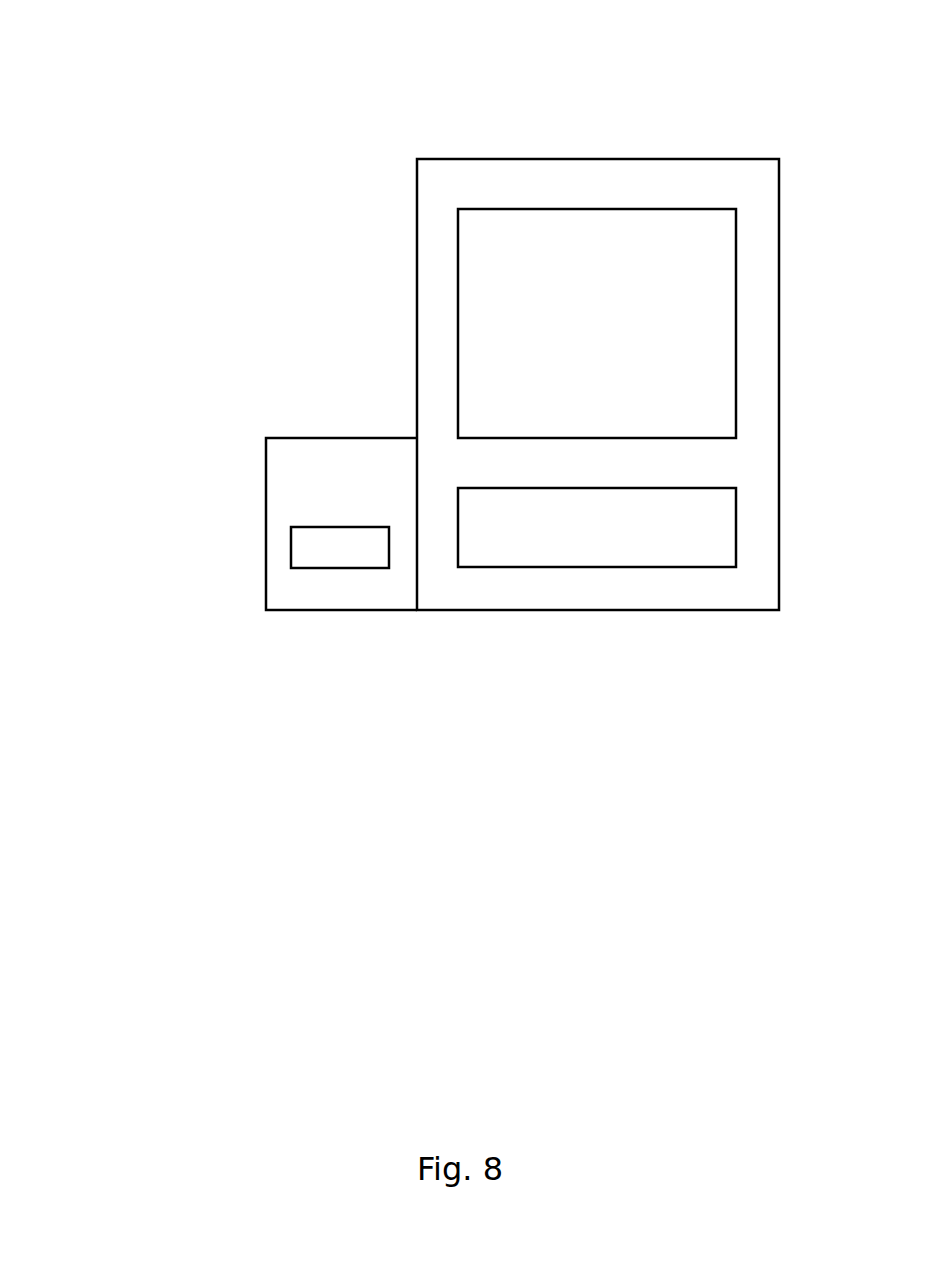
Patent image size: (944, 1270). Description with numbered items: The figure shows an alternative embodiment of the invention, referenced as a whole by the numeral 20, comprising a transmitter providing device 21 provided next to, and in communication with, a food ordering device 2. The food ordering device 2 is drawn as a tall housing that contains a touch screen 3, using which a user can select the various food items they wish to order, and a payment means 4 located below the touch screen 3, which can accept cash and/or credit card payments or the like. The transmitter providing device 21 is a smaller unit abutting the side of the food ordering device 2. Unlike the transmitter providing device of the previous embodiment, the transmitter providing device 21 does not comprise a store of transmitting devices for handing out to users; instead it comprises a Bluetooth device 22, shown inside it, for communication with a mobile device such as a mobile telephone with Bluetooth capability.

The device assembly 20 is at (157, 75).
The food ordering device 2 is at (692, 158).
The touch screen 3 is at (736, 322).
The payment means 4 is at (736, 527).
The transmitter providing device 21 is at (265, 447).
The Bluetooth device 22 is at (291, 547).